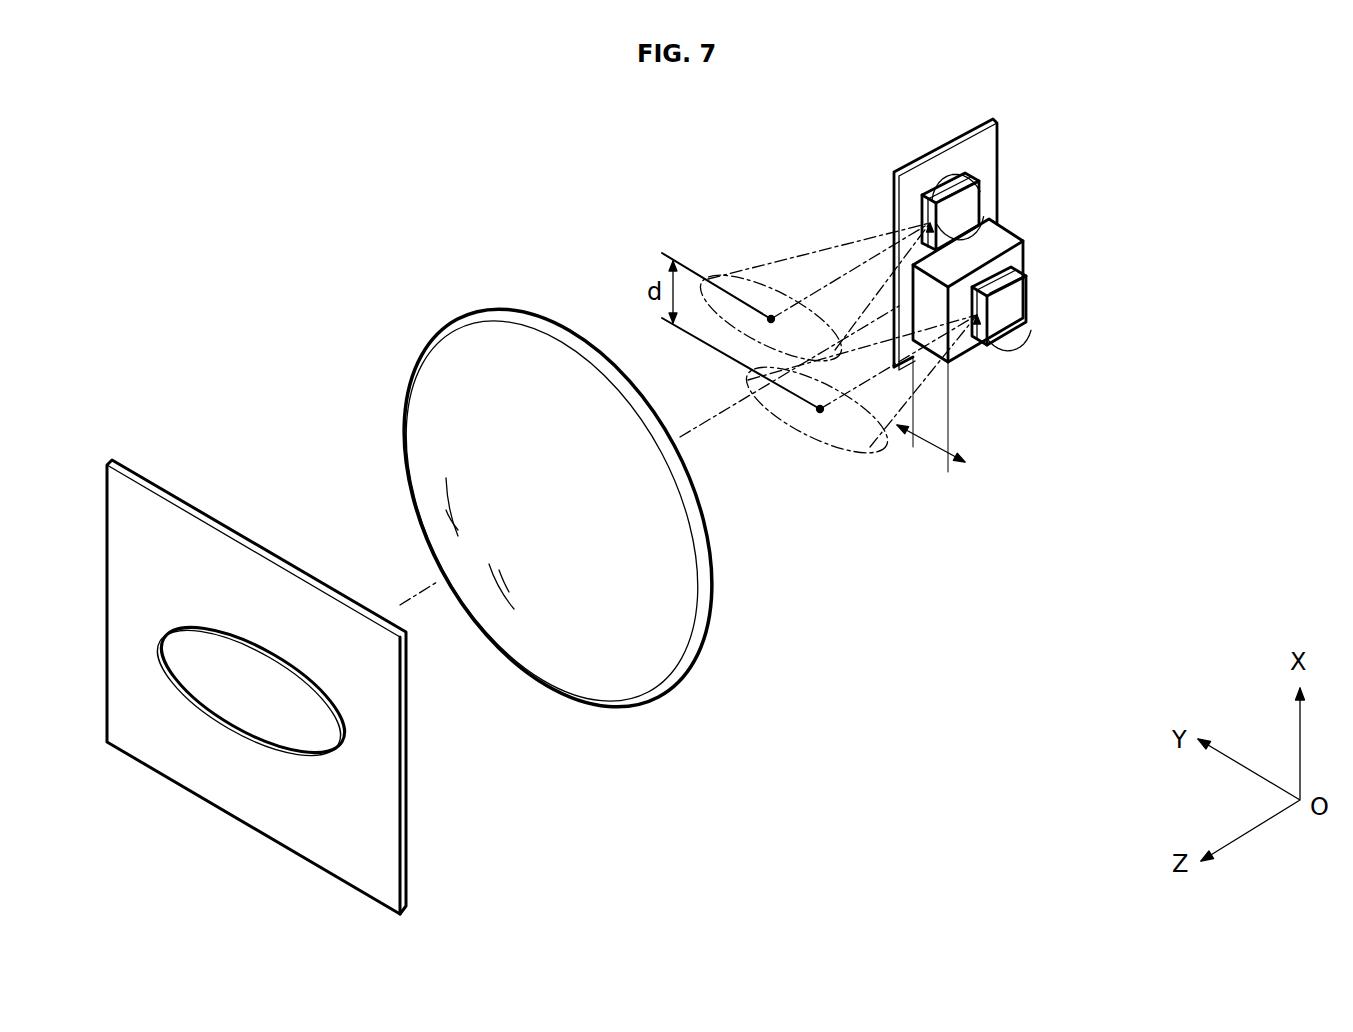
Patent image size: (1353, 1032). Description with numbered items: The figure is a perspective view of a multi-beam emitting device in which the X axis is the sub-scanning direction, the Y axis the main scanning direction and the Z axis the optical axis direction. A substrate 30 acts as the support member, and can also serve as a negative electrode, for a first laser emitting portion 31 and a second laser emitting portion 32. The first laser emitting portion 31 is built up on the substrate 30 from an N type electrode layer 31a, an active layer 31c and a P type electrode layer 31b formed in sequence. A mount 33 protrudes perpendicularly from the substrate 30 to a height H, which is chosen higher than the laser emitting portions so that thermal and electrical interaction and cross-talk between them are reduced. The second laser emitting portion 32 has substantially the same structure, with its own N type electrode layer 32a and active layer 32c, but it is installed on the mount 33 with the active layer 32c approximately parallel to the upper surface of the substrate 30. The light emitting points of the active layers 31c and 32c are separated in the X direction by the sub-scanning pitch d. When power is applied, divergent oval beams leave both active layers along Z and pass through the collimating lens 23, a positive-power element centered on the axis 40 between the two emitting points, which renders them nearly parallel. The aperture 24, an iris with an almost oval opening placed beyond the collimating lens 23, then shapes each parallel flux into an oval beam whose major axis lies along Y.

The collimating lens 23 is at (531, 364).
The aperture 24 is at (258, 546).
The substrate 30 is at (897, 372).
The first laser emitting portion 31 is at (960, 205).
The N type electrode layer 31a is at (957, 172).
The P type electrode layer 31b is at (961, 173).
The active layer 31c is at (978, 222).
The second laser emitting portion 32 is at (1005, 309).
The N type electrode layer 32a is at (1003, 275).
The active layer 32c is at (1030, 348).
The mount 33 is at (977, 362).
The optical axis 40 is at (722, 418).